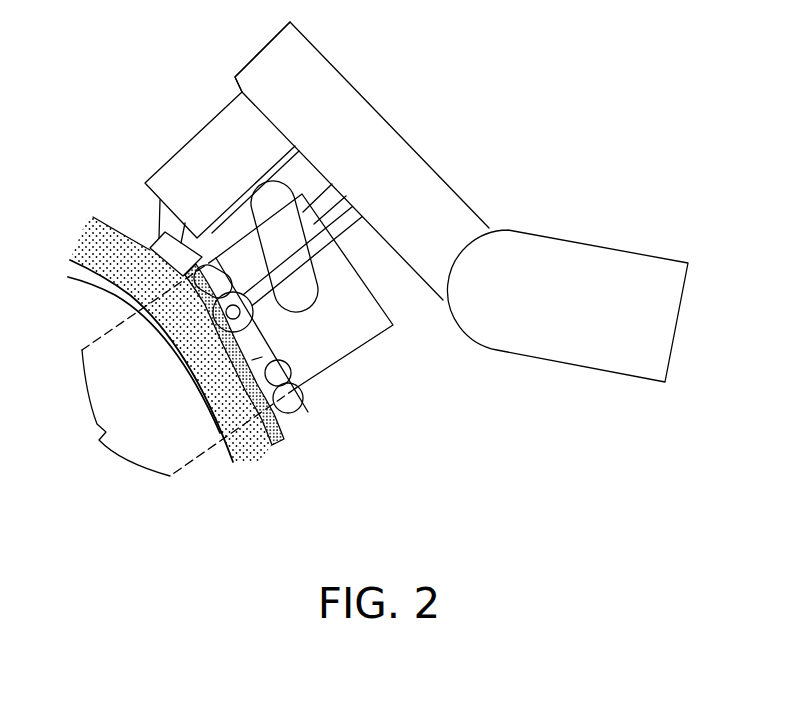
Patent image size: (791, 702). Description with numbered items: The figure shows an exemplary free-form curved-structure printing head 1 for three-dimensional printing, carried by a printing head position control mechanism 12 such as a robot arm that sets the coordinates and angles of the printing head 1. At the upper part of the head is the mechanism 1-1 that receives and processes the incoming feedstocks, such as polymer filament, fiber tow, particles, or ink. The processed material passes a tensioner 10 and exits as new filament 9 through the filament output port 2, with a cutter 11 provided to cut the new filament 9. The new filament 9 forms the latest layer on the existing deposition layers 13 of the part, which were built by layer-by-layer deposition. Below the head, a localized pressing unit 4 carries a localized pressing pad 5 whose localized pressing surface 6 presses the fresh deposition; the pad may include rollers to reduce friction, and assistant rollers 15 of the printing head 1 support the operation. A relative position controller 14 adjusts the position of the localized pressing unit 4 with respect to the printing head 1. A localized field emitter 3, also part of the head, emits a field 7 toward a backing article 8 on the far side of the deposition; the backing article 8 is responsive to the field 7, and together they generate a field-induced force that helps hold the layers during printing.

The printing head 1 is at (400, 160).
The feedstock receiving and processing mechanism 1-1 is at (325, 77).
The printing head position control mechanism 12 is at (550, 252).
The relative position controller 14 is at (265, 197).
The localized field emitter 3 is at (352, 298).
The assistant rollers 15 is at (224, 330).
The filament output port 2 is at (162, 215).
The tensioner 10 is at (160, 238).
The existing deposition layer 13 is at (258, 447).
The cutter 11 is at (170, 283).
The new filament 9 is at (165, 292).
The backing article 8 is at (137, 290).
The field 7 is at (189, 367).
The localized pressing unit 4 is at (273, 362).
The localized pressing pad 5 is at (275, 398).
The localized pressing surface 6 is at (252, 360).